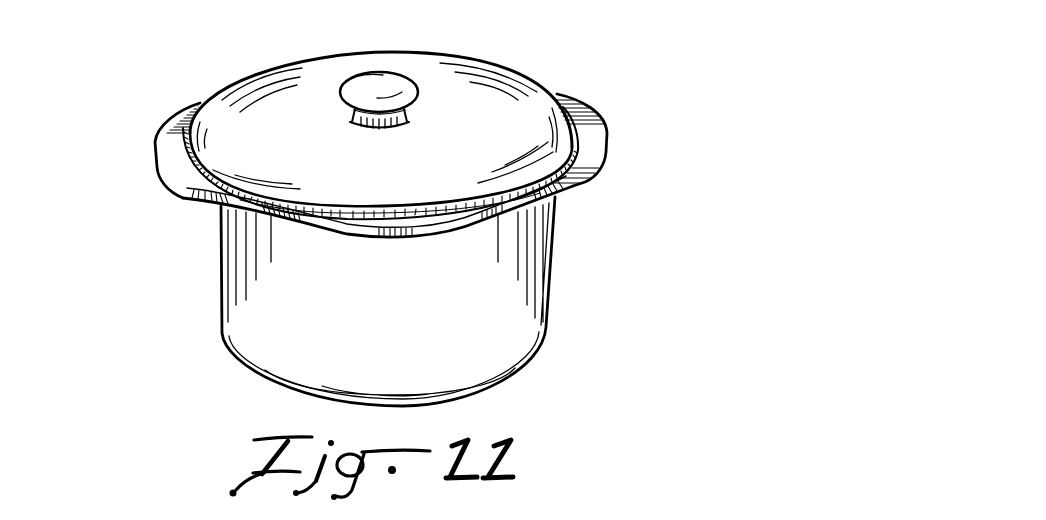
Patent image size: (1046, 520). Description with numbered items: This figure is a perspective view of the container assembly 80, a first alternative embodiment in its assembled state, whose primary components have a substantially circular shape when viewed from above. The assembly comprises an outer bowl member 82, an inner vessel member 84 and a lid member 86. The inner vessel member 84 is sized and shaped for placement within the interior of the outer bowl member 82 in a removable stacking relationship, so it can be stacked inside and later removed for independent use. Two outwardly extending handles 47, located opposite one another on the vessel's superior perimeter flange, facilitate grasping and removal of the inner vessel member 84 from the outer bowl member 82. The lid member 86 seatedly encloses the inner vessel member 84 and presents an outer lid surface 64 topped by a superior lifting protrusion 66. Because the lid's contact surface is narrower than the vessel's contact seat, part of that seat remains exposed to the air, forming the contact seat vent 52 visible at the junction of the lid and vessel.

The container assembly 80 is at (603, 65).
The outer bowl member 82 is at (552, 277).
The inner vessel member 84 is at (257, 217).
The outwardly extending handle 47 is at (155, 162).
The contact seat vent 52 is at (577, 135).
The outer lid surface 64 is at (462, 88).
The lid member 86 is at (227, 120).
The superior lifting protrusion 66 is at (350, 78).